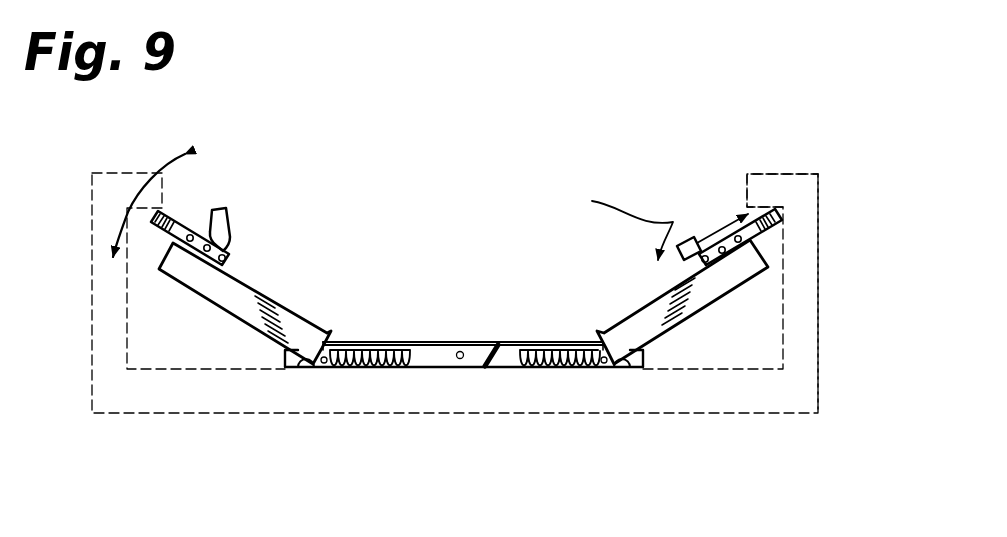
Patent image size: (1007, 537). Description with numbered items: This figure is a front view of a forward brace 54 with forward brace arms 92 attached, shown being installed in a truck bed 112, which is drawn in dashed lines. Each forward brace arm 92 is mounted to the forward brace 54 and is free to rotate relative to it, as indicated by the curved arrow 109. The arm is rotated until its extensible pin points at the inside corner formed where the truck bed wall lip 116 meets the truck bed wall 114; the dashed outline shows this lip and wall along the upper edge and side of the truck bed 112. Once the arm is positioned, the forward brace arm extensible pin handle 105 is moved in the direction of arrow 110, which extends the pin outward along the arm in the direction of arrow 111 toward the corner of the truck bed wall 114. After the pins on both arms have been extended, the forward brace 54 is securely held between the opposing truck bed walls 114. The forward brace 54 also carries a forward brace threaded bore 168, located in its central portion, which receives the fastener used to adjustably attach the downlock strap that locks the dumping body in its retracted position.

The forward brace 54 is at (435, 369).
The forward brace arm 92 is at (246, 297).
The forward brace arm extensible pin handle 105 is at (690, 260).
The arrow 109 is at (137, 192).
The arrow 110 is at (615, 221).
The arrow 111 is at (718, 232).
The truck bed 112 is at (600, 398).
The truck bed wall 114 is at (800, 306).
The truck bed wall lip 116 is at (784, 186).
The forward brace threaded bore 168 is at (460, 351).